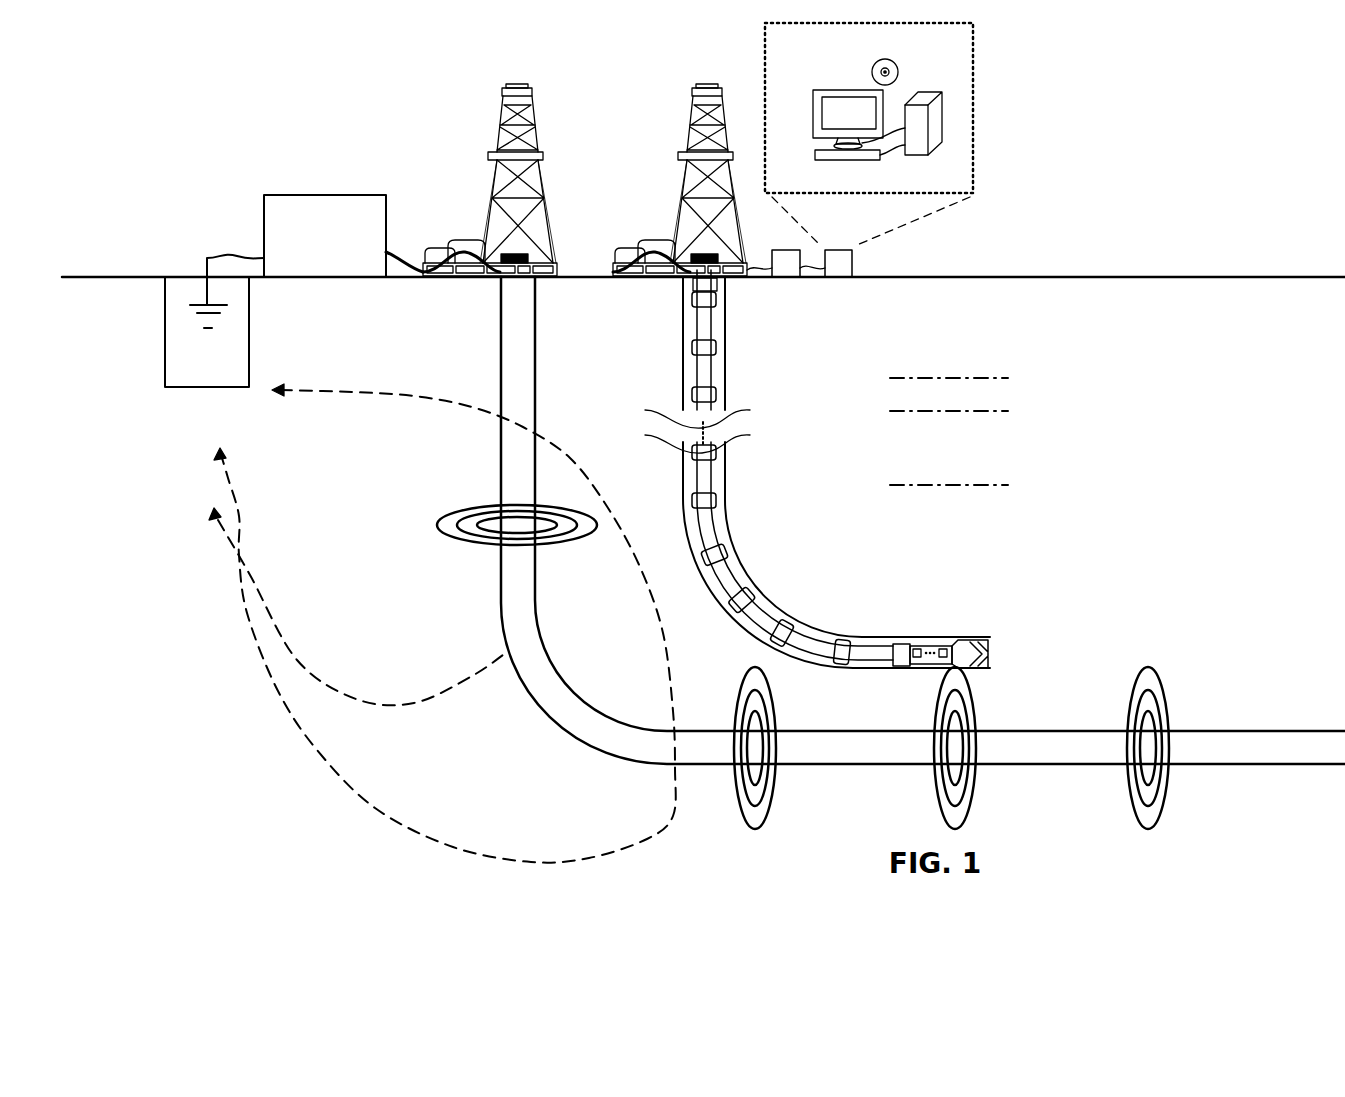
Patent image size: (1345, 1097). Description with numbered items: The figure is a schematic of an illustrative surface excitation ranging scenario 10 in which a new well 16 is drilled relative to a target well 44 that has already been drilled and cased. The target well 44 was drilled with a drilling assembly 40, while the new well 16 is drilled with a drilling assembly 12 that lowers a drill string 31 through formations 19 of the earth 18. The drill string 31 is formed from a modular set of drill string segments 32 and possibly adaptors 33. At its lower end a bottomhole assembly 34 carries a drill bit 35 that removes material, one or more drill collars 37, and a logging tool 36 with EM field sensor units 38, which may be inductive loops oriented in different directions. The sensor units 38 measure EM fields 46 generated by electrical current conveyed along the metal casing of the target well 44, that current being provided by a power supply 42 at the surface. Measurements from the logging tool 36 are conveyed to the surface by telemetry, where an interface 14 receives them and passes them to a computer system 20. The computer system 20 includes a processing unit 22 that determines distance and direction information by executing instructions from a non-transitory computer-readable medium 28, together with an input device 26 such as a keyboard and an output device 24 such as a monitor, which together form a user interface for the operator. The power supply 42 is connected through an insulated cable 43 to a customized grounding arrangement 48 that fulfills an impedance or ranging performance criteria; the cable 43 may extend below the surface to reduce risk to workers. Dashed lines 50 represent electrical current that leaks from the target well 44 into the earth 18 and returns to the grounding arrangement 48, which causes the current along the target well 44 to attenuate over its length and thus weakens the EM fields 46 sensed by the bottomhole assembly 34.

The surface excitation ranging scenario 10 is at (1159, 106).
The drilling assembly 12 is at (607, 267).
The interface 14 is at (790, 250).
The new well 16 is at (727, 326).
The earth 18 is at (671, 309).
The formations 19 is at (1023, 365).
The computer system 20 is at (855, 262).
The processing unit 22 is at (930, 92).
The output device 24 is at (813, 113).
The input device 26 is at (865, 158).
The non-transitory computer-readable medium 28 is at (878, 60).
The drill string 31 is at (755, 467).
The drill string segments 32 is at (713, 333).
The adaptors 33 is at (690, 393).
The bottomhole assembly 34 is at (943, 620).
The drill bit 35 is at (975, 629).
The logging tool 36 is at (932, 646).
The drill collar 37 is at (903, 643).
The EM field sensor units 38 is at (930, 664).
The drilling assembly 40 is at (417, 267).
The power supply 42 is at (329, 194).
The insulated cable 43 is at (219, 253).
The target well 44 is at (500, 346).
The EM fields 46 is at (483, 545).
The customized grounding arrangement 48 is at (165, 330).
The dashed lines 50 is at (239, 510).